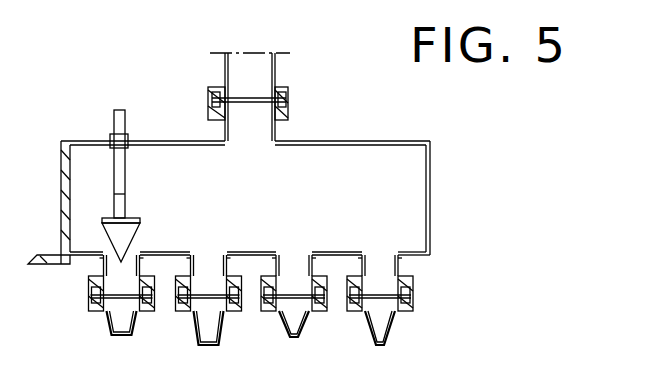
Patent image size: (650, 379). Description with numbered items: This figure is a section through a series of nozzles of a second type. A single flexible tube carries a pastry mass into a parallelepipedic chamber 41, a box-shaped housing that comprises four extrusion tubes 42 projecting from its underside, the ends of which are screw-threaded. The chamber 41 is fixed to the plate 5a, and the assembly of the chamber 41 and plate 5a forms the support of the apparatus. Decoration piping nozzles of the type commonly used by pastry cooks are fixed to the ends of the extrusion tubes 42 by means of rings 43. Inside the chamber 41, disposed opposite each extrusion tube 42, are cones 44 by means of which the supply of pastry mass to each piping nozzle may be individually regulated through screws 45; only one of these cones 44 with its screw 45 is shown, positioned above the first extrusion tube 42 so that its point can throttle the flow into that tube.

The parallelepipedic chamber 41 is at (303, 142).
The extrusion tube 42 is at (186, 266).
The ring 43 is at (178, 313).
The cone 44 is at (117, 233).
The screw 45 is at (120, 120).
The plate 5a is at (62, 187).